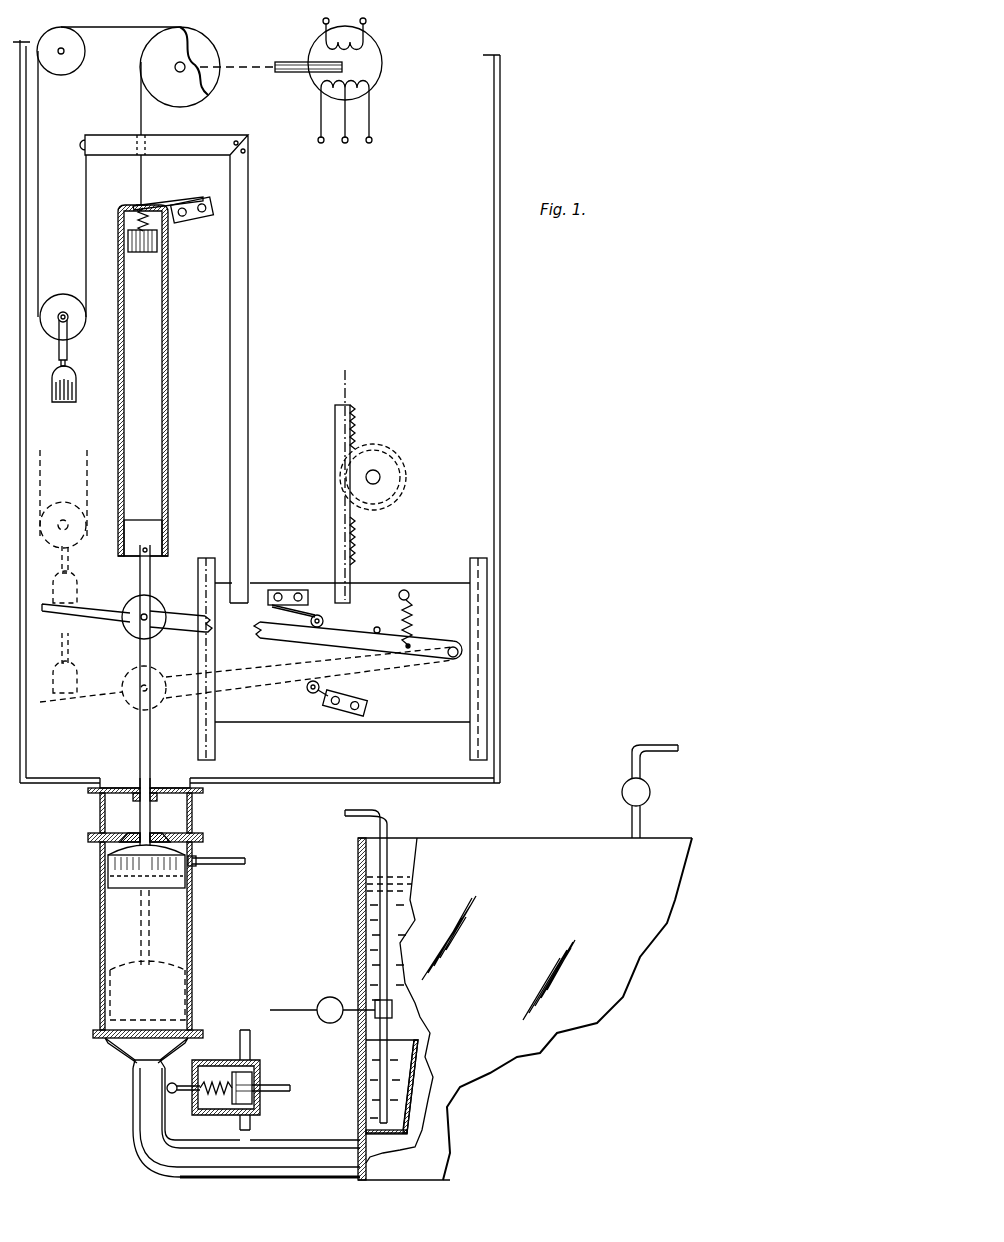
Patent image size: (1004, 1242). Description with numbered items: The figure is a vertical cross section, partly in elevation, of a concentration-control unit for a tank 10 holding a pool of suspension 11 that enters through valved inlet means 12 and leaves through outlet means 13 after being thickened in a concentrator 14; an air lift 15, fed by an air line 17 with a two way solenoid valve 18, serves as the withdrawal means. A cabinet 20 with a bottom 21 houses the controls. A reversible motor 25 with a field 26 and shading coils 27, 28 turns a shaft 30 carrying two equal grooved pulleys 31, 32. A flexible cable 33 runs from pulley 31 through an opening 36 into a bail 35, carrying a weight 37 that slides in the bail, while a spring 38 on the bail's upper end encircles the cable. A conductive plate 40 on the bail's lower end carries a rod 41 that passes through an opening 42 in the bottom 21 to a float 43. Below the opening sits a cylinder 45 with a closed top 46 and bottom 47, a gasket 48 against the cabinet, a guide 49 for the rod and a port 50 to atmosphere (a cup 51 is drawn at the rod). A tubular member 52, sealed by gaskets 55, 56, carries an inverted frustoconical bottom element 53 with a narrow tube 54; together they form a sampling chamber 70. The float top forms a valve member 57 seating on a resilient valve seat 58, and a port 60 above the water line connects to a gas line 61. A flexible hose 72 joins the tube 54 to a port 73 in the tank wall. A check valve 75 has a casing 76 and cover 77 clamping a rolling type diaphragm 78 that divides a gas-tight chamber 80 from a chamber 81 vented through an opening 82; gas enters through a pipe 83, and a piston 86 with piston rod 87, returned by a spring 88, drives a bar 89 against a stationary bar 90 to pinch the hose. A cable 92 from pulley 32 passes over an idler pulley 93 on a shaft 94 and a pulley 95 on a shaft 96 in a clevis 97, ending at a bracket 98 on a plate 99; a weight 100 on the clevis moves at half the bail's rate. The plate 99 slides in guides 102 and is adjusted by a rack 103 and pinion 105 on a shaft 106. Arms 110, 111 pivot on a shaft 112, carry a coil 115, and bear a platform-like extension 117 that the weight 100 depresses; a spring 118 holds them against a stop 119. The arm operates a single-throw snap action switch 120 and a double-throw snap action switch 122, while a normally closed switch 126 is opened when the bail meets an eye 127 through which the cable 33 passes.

The tank 10 is at (547, 838).
The pool of suspension 11 is at (395, 878).
The valved inlet means 12 is at (632, 770).
The outlet means 13 is at (358, 812).
The concentrator 14 is at (420, 1056).
The air lift 15 is at (360, 942).
The air line 17 is at (282, 1010).
The two way solenoid valve 18 is at (329, 1000).
The cabinet 20 is at (500, 330).
The bottom 21 is at (415, 784).
The reversible motor 25 is at (420, 63).
The field 26 is at (366, 26).
The shading coil 27 is at (321, 118).
The shading coil 28 is at (370, 118).
The shaft 30 is at (186, 66).
The grooved pulley 31 is at (196, 96).
The grooved pulley 32 is at (200, 32).
The flexible cable 33 is at (140, 103).
The bail 35 is at (169, 380).
The opening 36 is at (140, 203).
The weight 37 is at (145, 254).
The spring 38 is at (138, 220).
The plate 40 is at (142, 521).
The rod 41 is at (151, 582).
The opening 42 is at (126, 780).
The float 43 is at (140, 887).
The cylinder 45 is at (194, 803).
The closed top 46 is at (160, 782).
The bottom 47 is at (112, 828).
The gasket 48 is at (90, 790).
The guide 49 is at (158, 801).
The port 50 is at (100, 816).
The piston head 51 is at (185, 850).
The tubular member 52 is at (193, 948).
The bottom element 53 is at (112, 1047).
The tube 54 is at (135, 1062).
The gasket 55 is at (88, 839).
The gasket 56 is at (93, 1034).
The valve member 57 is at (162, 977).
The resilient valve seat 58 is at (122, 842).
The port 60 is at (196, 866).
The line 61 is at (232, 864).
The sampling chamber 70 is at (140, 945).
The flexible hose 72 is at (275, 1147).
The port 73 is at (360, 1150).
The check valve 75 is at (298, 1069).
The casing 76 is at (212, 1062).
The cover 77 is at (252, 1060).
The rolling type diaphragm 78 is at (242, 1050).
The gas-tight chamber 80 is at (252, 1100).
The chamber 81 is at (218, 1112).
The opening 82 is at (205, 1093).
The pipe 83 is at (290, 1088).
The piston 86 is at (235, 1105).
The piston rod 87 is at (176, 1081).
The spring 88 is at (198, 1110).
The bar 89 is at (165, 1098).
The stationary bar 90 is at (133, 1100).
The cable 92 is at (100, 28).
The idler pulley 93 is at (84, 62).
The shaft 94 is at (59, 46).
The pulley 95 is at (67, 290).
The shaft 96 is at (70, 320).
The clevis 97 is at (68, 355).
The bracket 98 is at (250, 297).
The plate 99 is at (365, 723).
The weight 100 is at (70, 400).
The guides 102 is at (470, 558).
The rack 103 is at (335, 430).
The pinion 105 is at (405, 462).
The shaft 106 is at (374, 470).
The arm 110 is at (180, 632).
The arm 111 is at (232, 638).
The shaft 112 is at (453, 658).
The coil 115 is at (128, 637).
The platform-like extension 117 is at (78, 613).
The spring 118 is at (414, 612).
The stop 119 is at (377, 627).
The single-throw snap action switch 120 is at (292, 590).
The double-throw snap action switch 122 is at (368, 703).
The normally closed single-throw snap action switch 126 is at (192, 221).
The eye 127 is at (148, 203).